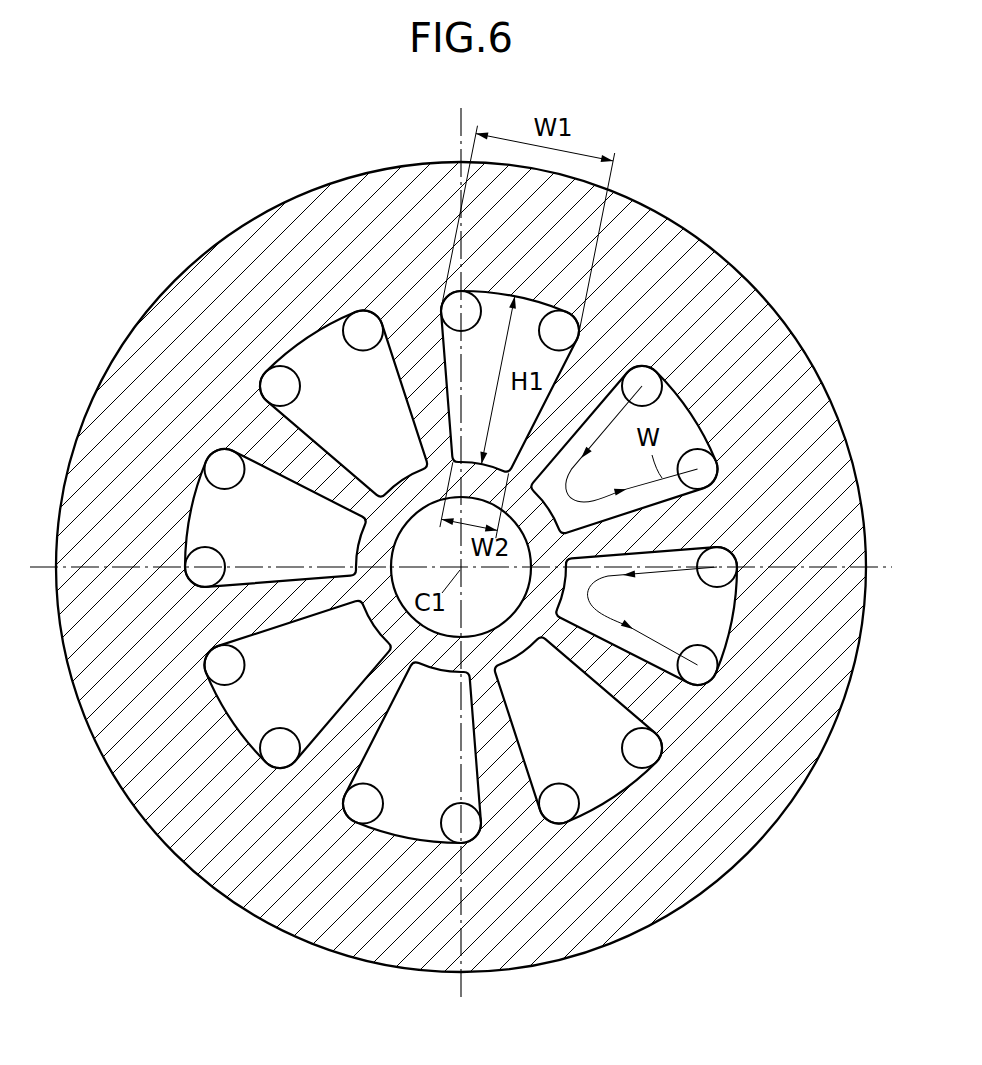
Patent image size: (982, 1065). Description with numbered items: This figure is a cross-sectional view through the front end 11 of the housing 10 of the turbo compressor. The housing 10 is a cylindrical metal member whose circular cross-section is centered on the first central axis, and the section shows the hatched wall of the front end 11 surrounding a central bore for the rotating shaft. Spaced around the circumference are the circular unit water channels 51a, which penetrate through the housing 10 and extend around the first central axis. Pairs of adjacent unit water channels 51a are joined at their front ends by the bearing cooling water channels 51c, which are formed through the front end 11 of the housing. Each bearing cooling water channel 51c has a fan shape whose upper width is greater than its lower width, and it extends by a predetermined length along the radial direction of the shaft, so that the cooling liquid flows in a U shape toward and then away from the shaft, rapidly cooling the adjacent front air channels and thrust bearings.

The housing 10 is at (727, 226).
The front end of the housing 11 is at (643, 228).
The unit water channels 51a is at (362, 327).
The bearing cooling water channels 51c is at (353, 408).